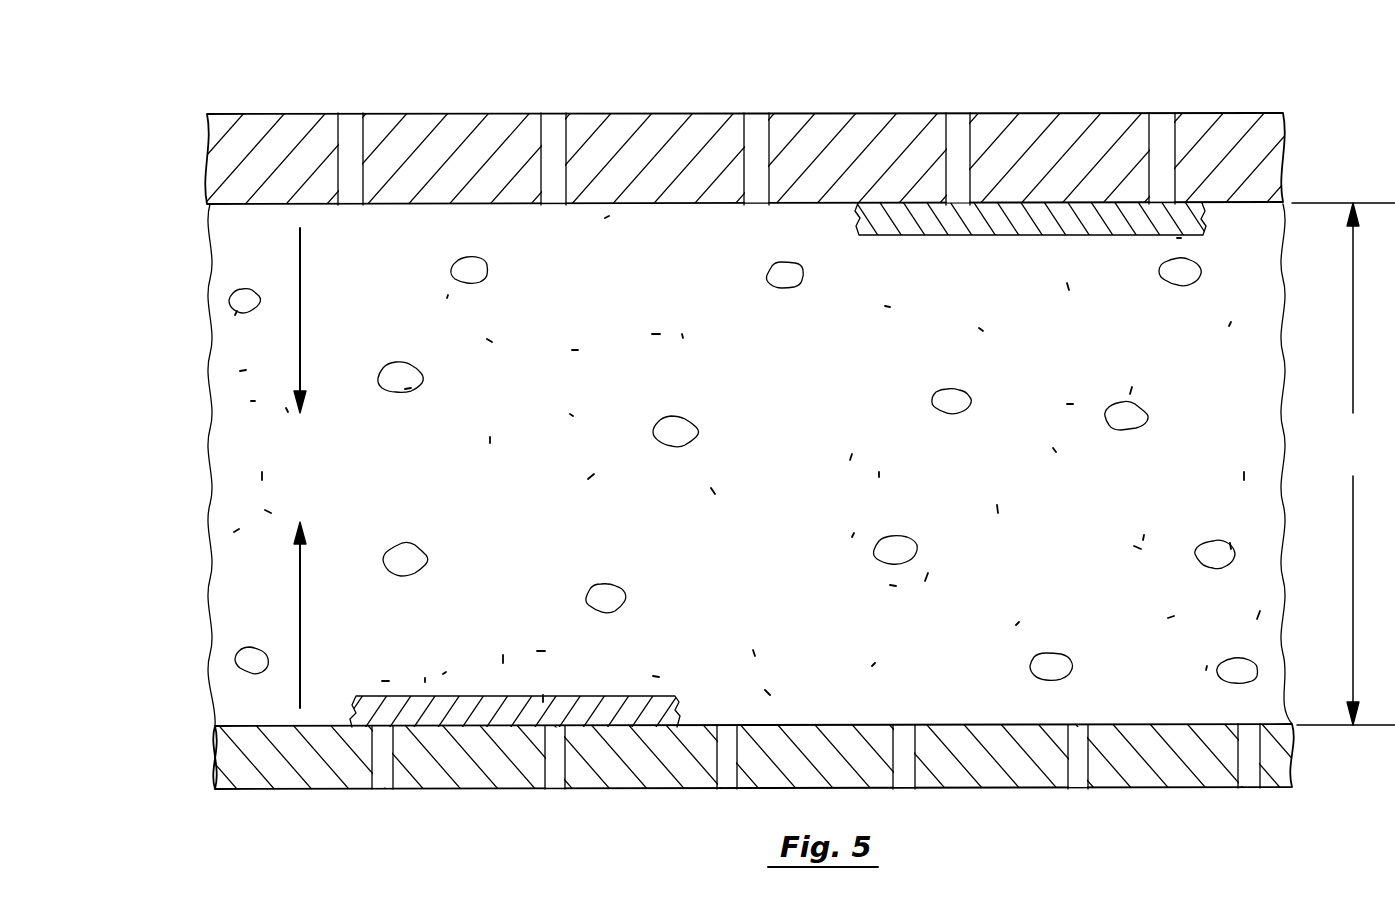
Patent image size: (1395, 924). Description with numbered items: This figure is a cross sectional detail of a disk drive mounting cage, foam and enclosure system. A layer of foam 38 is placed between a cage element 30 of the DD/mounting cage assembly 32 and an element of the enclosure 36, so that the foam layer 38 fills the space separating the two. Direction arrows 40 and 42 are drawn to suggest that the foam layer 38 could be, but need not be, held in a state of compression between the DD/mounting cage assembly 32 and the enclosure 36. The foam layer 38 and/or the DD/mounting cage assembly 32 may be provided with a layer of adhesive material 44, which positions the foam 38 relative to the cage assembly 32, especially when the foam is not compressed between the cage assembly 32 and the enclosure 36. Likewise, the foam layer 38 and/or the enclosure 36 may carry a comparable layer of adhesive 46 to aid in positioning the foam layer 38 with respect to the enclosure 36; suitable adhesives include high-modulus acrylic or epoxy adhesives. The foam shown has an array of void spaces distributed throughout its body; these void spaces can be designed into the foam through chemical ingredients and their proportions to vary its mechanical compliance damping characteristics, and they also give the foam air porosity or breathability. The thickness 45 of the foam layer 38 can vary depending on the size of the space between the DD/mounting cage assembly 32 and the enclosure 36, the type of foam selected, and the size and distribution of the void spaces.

The cage element 30 is at (731, 695).
The DD/mounting cage assembly 32 is at (204, 750).
The enclosure 36 is at (734, 117).
The foam layer 38 is at (266, 460).
The direction arrow 40 is at (302, 618).
The direction arrow 42 is at (302, 325).
The layer of adhesive material 44 is at (458, 698).
The thickness of the foam layer 45 is at (1343, 464).
The layer of adhesive 46 is at (968, 222).